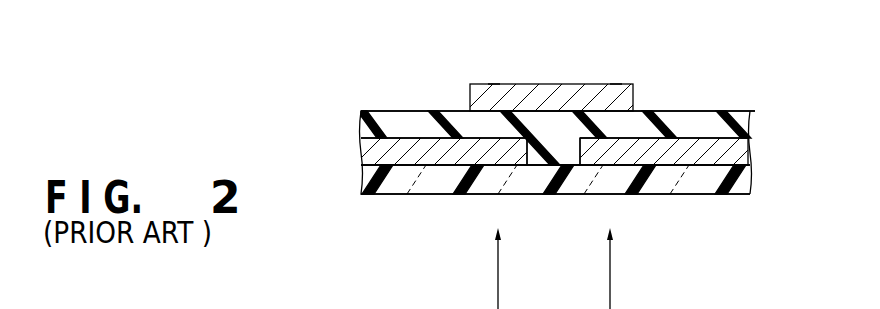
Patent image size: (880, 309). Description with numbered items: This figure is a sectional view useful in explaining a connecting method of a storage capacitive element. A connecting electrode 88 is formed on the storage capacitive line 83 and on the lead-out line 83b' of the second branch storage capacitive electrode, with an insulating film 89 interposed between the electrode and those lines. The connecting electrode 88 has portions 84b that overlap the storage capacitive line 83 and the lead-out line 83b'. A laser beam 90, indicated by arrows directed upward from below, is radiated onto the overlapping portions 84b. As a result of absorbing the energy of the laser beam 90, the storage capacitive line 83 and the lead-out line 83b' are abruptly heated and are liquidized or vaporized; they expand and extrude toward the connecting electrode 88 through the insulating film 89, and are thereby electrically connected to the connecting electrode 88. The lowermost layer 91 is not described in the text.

The storage capacitive line 83 is at (362, 153).
The lead-out line 83b' is at (575, 152).
The overlapping portions 84b is at (495, 82).
The connecting electrode 88 is at (487, 90).
The insulating film 89 is at (748, 117).
The laser beam 90 is at (498, 288).
The lower conductor layer 91 is at (747, 183).